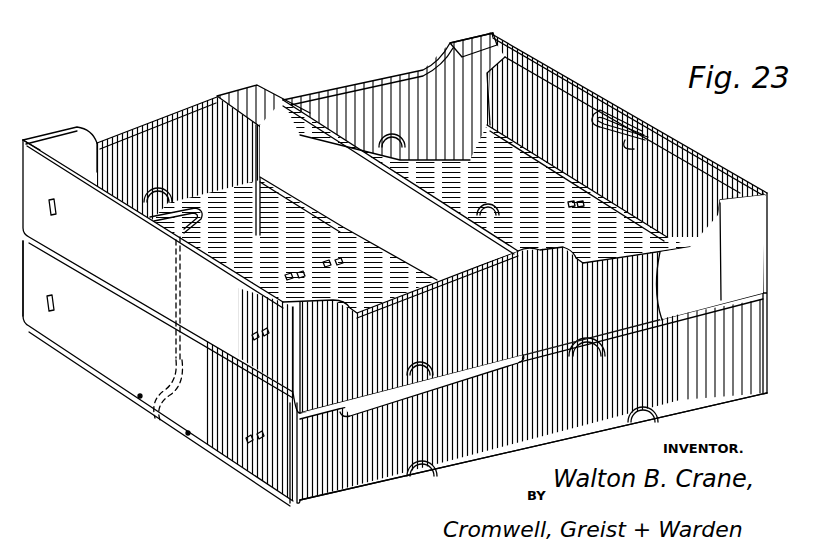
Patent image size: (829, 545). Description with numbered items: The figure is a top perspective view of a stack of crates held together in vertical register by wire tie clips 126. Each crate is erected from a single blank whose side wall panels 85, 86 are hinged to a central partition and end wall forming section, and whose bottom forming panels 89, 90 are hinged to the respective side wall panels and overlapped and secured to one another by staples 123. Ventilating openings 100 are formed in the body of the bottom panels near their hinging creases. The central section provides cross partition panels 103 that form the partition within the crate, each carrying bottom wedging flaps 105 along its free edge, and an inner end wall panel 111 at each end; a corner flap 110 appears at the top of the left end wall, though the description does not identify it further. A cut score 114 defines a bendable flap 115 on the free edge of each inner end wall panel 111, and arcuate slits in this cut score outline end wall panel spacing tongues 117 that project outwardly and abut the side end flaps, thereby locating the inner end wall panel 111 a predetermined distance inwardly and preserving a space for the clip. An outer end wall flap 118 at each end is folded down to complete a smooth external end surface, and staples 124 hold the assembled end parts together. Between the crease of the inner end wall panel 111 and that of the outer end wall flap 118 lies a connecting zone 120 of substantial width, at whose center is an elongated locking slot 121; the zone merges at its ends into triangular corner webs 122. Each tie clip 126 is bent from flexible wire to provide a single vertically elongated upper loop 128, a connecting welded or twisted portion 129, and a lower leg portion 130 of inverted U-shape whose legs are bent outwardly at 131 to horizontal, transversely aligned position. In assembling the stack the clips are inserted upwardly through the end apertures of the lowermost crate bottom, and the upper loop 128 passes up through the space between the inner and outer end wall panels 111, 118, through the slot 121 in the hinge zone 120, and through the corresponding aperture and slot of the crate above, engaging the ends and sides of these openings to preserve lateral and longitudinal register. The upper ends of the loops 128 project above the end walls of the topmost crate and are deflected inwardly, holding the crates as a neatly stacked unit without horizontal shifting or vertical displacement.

The side wall panel 85 is at (463, 475).
The side wall panel 86 is at (338, 99).
The bottom forming panel 89 is at (340, 262).
The bottom forming panel 90 is at (179, 158).
The ventilating opening 100 is at (392, 134).
The cross partition panel 103 is at (257, 131).
The bottom wedging flap 105 is at (294, 246).
The corner flap 110 is at (243, 92).
The inner end wall panel 111 is at (680, 170).
The cut score 114 is at (503, 127).
The bendable flap 115 is at (486, 182).
The end wall panel spacing tongue 117 is at (550, 150).
The outer end wall flap 118 is at (90, 260).
The connecting zone 120 is at (97, 172).
The locking slot 121 is at (150, 217).
The triangular corner web 122 is at (53, 137).
The staple 123 is at (568, 203).
The staple 124 is at (57, 213).
The tie clip 126 is at (187, 284).
The upper loop 128 is at (203, 222).
The connecting portion 129 is at (152, 368).
The lower leg portion 130 is at (140, 397).
The outwardly bent leg end 131 is at (187, 436).